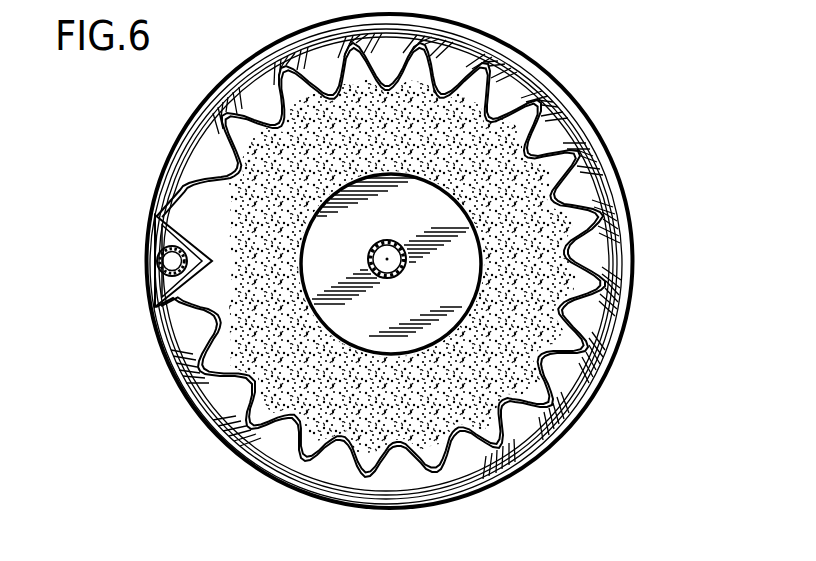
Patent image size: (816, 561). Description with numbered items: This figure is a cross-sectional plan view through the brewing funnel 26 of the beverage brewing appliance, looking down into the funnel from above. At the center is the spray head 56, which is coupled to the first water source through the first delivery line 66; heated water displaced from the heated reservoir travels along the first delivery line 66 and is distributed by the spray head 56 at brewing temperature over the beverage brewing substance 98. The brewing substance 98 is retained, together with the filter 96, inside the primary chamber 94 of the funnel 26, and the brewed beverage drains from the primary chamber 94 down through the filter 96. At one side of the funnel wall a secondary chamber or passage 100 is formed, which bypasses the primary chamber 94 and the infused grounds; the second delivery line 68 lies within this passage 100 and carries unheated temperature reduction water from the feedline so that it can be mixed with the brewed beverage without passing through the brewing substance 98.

The brewing funnel 26 is at (174, 137).
The spray head 56 is at (470, 303).
The first delivery line 66 is at (380, 278).
The second delivery line 68 is at (158, 272).
The primary chamber 94 is at (607, 252).
The filter 96 is at (230, 393).
The beverage brewing substance 98 is at (297, 372).
The secondary chamber or passage 100 is at (160, 233).